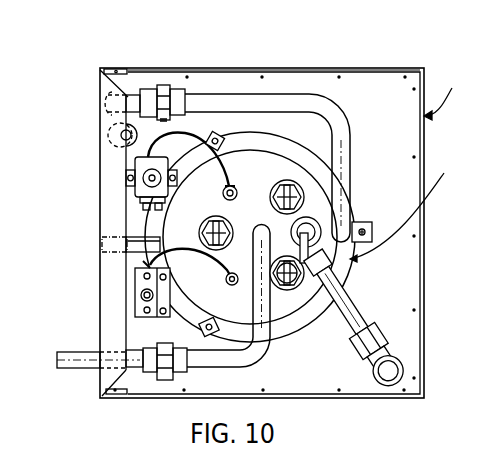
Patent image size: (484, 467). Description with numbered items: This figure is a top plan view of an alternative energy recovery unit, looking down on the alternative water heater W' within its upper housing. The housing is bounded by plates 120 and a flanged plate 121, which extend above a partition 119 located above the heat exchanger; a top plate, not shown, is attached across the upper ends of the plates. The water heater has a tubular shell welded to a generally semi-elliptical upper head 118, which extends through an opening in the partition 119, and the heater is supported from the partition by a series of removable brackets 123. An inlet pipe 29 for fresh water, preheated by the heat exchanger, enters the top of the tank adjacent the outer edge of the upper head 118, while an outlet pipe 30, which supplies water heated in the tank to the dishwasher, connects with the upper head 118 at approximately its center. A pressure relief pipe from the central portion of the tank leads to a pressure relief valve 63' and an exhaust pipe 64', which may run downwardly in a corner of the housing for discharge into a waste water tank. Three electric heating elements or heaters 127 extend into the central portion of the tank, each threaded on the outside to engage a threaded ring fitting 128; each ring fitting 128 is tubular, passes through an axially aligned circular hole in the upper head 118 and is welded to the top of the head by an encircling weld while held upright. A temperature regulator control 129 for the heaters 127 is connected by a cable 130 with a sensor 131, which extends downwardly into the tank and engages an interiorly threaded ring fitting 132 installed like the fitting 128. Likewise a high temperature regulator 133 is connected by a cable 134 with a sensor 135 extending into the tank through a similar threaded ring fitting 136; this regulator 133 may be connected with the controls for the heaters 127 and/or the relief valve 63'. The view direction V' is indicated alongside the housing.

The plates 120 is at (160, 69).
The partition 119 is at (356, 90).
The flanged plate 121 is at (100, 188).
The inlet pipe 29 is at (238, 96).
The outlet pipe 30 is at (77, 360).
The threaded ring fitting 128 is at (297, 185).
The electric heating elements 127 is at (303, 192).
The removable brackets 123 is at (222, 135).
The temperature regulator control 129 is at (133, 172).
The cable 130 is at (166, 143).
The sensor 131 is at (233, 184).
The interiorly threaded ring fitting 132 is at (233, 200).
The high temperature regulator 133 is at (137, 307).
The cable 134 is at (143, 261).
The sensor 135 is at (227, 281).
The ring fitting 136 is at (230, 285).
The upper head 118 is at (305, 292).
The pressure relief valve 63' is at (301, 197).
The exhaust pipe 64' is at (350, 304).
The view line V' is at (448, 98).
The alternative water heater W' is at (408, 206).